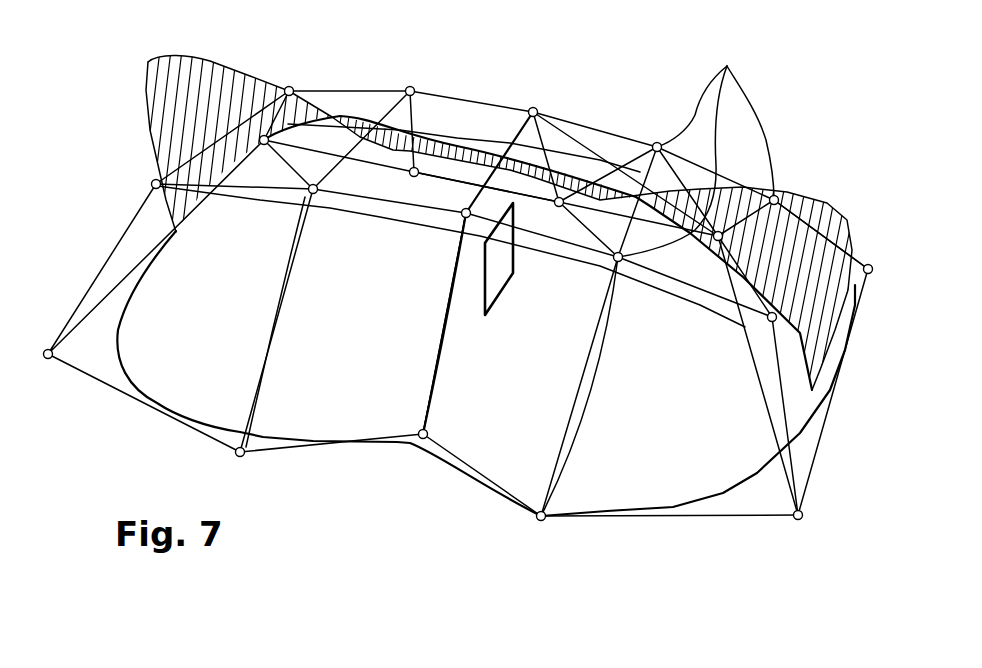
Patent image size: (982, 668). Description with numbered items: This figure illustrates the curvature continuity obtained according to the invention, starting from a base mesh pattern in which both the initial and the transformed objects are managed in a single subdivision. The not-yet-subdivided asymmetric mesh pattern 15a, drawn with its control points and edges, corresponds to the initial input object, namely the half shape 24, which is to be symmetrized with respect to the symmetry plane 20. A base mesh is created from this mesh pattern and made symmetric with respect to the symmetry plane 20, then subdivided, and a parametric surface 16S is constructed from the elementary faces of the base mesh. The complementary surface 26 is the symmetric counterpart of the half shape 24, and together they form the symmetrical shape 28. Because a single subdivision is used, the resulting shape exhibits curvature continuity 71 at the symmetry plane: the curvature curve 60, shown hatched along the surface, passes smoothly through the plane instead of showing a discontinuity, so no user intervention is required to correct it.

The curvature curve 60 is at (207, 100).
The curvature continuity 71 is at (500, 133).
The mesh pattern 15a is at (696, 147).
The symmetry plane 20 is at (500, 297).
The symmetrical shape 28 is at (363, 472).
The complementary surface 26 is at (245, 322).
The parametric surface 16S is at (403, 323).
The half shape 24 is at (607, 386).